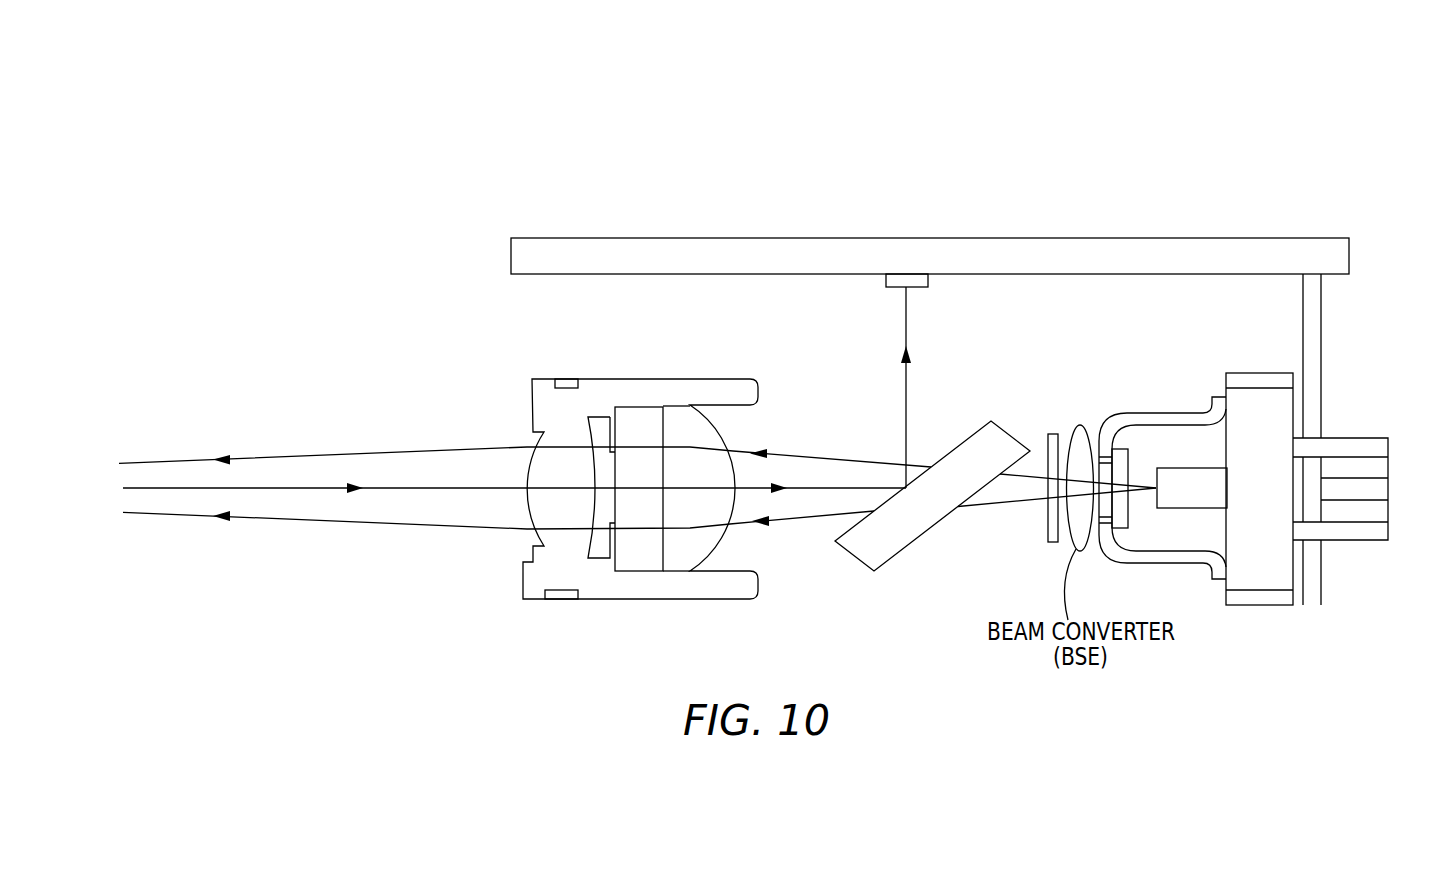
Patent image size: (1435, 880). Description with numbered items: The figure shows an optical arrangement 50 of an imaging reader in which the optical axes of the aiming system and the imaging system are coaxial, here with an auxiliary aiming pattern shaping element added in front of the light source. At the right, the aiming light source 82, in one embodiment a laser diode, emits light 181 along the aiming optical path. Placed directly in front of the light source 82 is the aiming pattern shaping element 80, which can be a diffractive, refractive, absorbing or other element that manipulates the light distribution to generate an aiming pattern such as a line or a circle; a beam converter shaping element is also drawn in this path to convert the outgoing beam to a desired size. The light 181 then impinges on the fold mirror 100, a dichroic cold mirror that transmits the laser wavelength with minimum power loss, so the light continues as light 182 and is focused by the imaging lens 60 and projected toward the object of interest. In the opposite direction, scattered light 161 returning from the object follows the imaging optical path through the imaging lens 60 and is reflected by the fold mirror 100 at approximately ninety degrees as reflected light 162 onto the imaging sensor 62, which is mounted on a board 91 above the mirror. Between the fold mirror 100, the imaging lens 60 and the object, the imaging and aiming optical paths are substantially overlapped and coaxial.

The optical system 50 is at (470, 85).
The sensor board 91 is at (921, 237).
The imaging sensor 62 is at (924, 288).
The reflected light 162 is at (907, 387).
The scattered light 161 is at (153, 488).
The light 182 is at (397, 525).
The imaging lens 60 is at (640, 600).
The fold mirror 100 is at (900, 552).
The aiming pattern shaping element 80 is at (1049, 541).
The light 181 is at (1037, 470).
The light source 82 is at (1157, 490).